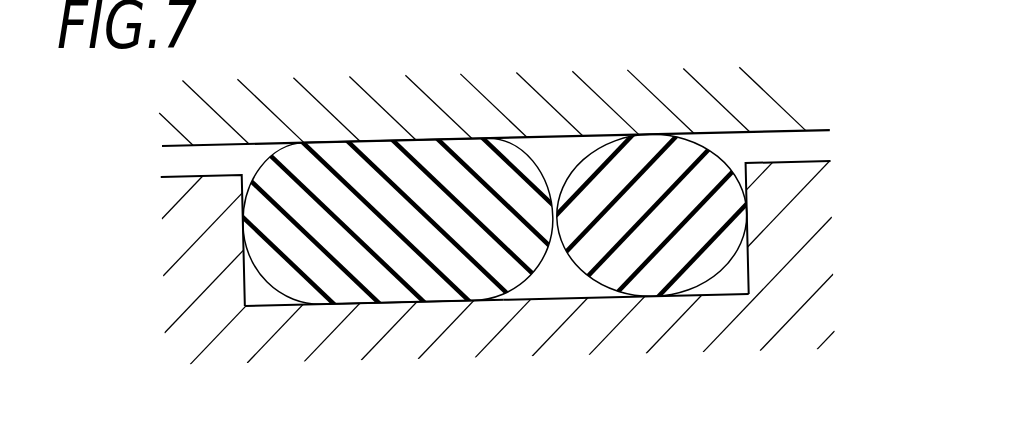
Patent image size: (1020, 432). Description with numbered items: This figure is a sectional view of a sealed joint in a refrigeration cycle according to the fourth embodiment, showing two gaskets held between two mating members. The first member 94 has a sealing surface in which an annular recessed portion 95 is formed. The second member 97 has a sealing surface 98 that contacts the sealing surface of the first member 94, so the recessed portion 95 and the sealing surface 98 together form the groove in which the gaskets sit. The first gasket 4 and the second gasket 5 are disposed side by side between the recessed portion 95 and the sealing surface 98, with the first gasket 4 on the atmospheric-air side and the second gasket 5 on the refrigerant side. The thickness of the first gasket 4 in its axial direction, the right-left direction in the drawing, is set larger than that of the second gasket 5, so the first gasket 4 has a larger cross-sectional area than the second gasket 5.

The first gasket 4 is at (389, 168).
The second gasket 5 is at (667, 142).
The second member 97 is at (505, 82).
The sealing surface 98 is at (795, 132).
The first member 94 is at (553, 342).
The recessed portion 95 is at (572, 280).